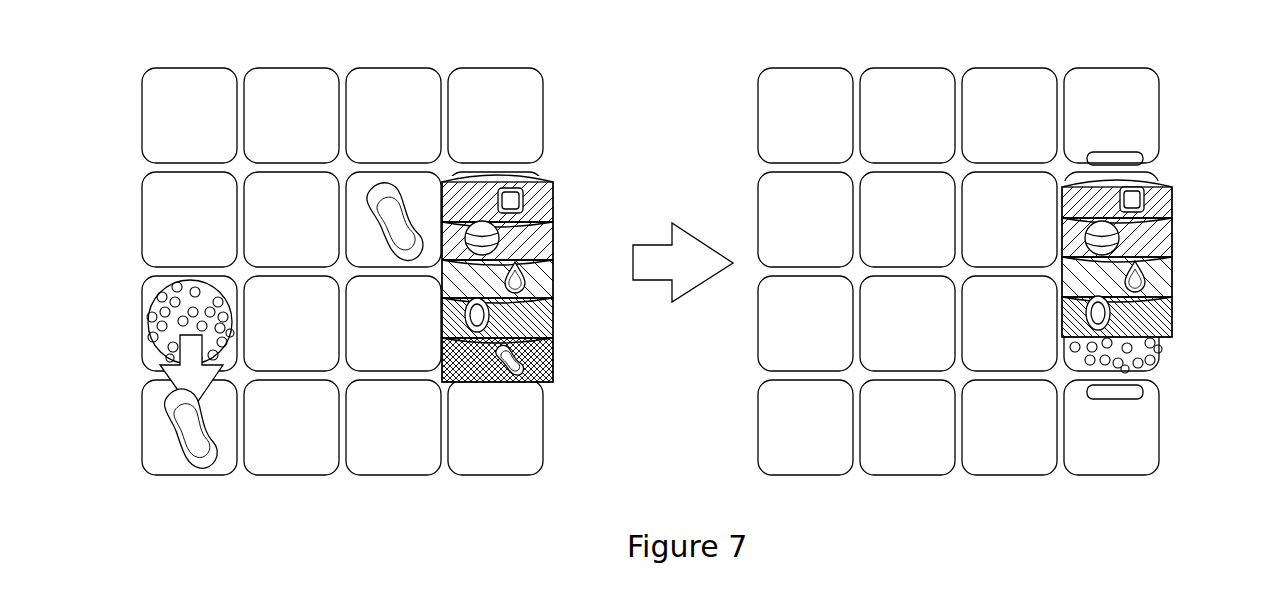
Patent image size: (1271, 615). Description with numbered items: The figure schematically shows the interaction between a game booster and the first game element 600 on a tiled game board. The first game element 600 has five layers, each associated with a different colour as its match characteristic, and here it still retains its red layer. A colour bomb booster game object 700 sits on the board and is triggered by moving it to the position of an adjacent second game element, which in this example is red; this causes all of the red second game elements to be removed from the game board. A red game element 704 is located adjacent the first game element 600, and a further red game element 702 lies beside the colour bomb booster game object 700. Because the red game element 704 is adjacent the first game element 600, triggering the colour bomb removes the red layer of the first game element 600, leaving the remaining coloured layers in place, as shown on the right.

The first game element 600 is at (526, 208).
The colour bomb booster game object 700 is at (150, 325).
The bean game element 702 is at (153, 425).
The red game element 704 is at (392, 173).